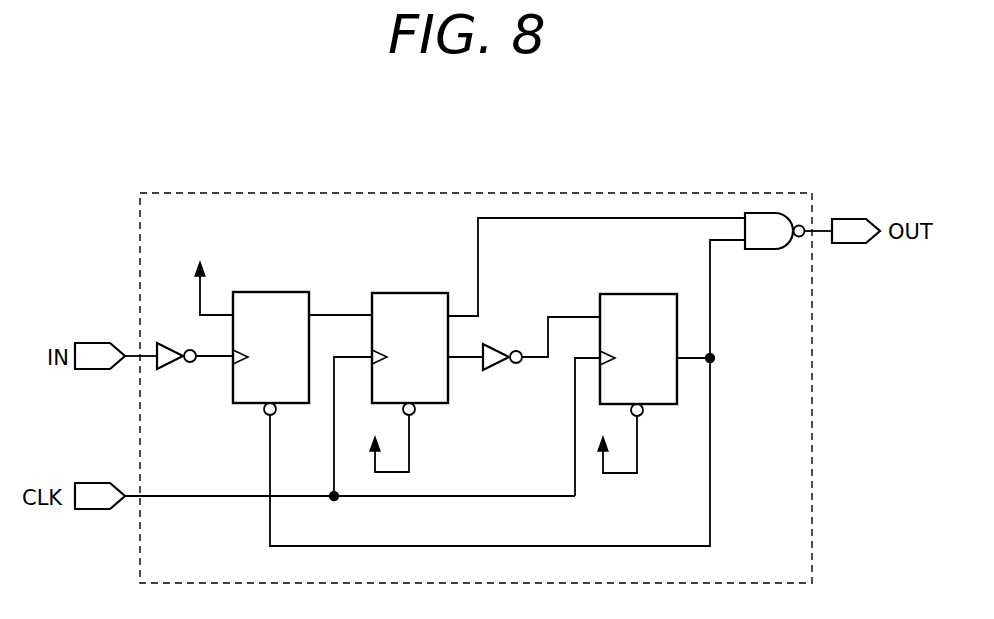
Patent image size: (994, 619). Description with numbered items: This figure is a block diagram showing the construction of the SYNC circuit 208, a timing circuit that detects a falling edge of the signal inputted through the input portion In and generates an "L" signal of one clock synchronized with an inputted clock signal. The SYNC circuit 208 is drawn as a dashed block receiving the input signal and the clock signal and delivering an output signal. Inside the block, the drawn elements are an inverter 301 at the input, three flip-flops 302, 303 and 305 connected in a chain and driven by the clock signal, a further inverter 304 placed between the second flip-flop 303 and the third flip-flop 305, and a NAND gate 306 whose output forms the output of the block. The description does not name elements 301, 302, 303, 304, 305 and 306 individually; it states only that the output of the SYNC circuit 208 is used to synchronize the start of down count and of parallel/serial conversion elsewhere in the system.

The SYNC circuit 208 is at (399, 193).
The inverter 301 is at (169, 364).
The flip-flop 302 is at (274, 292).
The flip-flop 303 is at (412, 293).
The inverter 304 is at (501, 352).
The flip-flop 305 is at (640, 294).
The NAND gate 306 is at (768, 249).